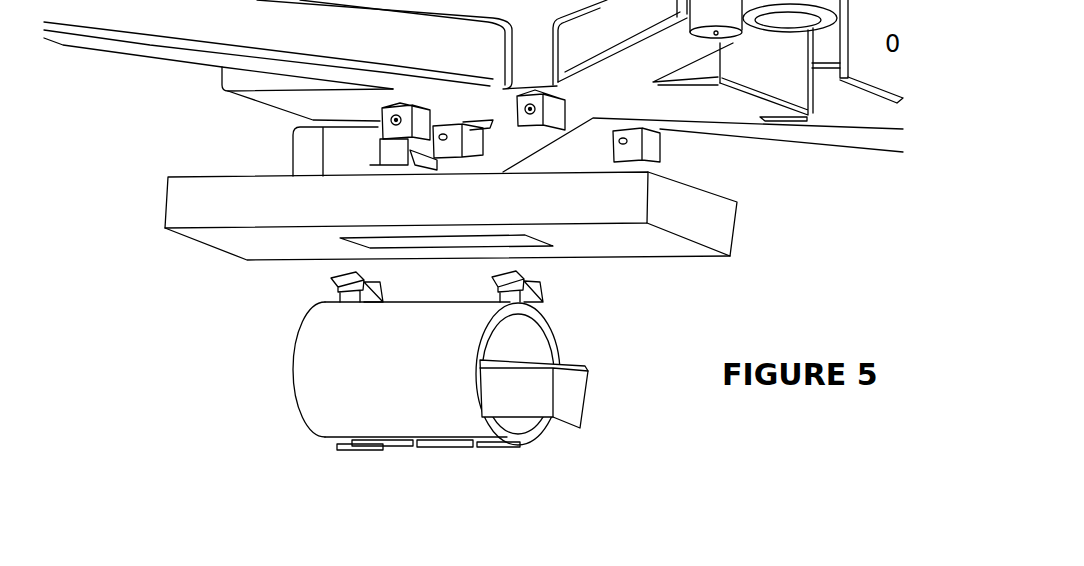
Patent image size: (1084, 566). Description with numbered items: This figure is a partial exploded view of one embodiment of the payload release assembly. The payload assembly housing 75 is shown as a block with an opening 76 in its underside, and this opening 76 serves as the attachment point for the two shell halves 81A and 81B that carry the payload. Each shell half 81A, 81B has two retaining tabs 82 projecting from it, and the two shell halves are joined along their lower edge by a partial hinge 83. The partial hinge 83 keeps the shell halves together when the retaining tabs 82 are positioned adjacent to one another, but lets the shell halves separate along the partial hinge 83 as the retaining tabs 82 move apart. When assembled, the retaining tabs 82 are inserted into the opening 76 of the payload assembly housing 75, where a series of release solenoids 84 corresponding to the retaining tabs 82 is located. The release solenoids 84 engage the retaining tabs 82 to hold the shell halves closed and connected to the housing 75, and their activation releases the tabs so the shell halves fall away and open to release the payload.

The payload assembly housing 75 is at (499, 233).
The opening 76 is at (530, 244).
The shell half 81A is at (303, 413).
The shell half 81B is at (555, 333).
The retaining tabs 82 is at (325, 281).
The partial hinge 83 is at (368, 457).
The release solenoids 84 is at (650, 147).